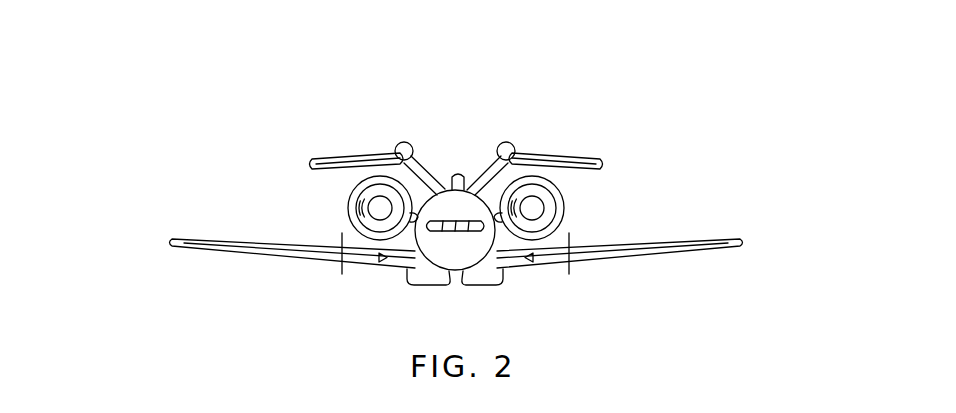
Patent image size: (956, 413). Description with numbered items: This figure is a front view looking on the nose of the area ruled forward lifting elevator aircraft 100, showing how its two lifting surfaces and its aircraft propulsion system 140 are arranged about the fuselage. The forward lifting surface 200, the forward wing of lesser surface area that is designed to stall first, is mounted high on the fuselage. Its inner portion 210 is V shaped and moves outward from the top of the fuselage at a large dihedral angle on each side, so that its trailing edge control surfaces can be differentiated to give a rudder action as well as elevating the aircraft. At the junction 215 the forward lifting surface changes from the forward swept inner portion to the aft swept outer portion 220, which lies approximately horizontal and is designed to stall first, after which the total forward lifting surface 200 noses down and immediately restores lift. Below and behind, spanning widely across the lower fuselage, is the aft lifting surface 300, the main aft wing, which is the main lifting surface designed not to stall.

The area ruled forward lifting elevator aircraft 100 is at (478, 330).
The aircraft propulsion system 140 is at (347, 203).
The forward lifting surface 200 is at (262, 163).
The inner portion of the forward lifting surface 210 is at (483, 178).
The junction 215 is at (401, 143).
The outer portion of the forward lifting surface 220 is at (347, 157).
The aft lifting surface 300 is at (146, 243).